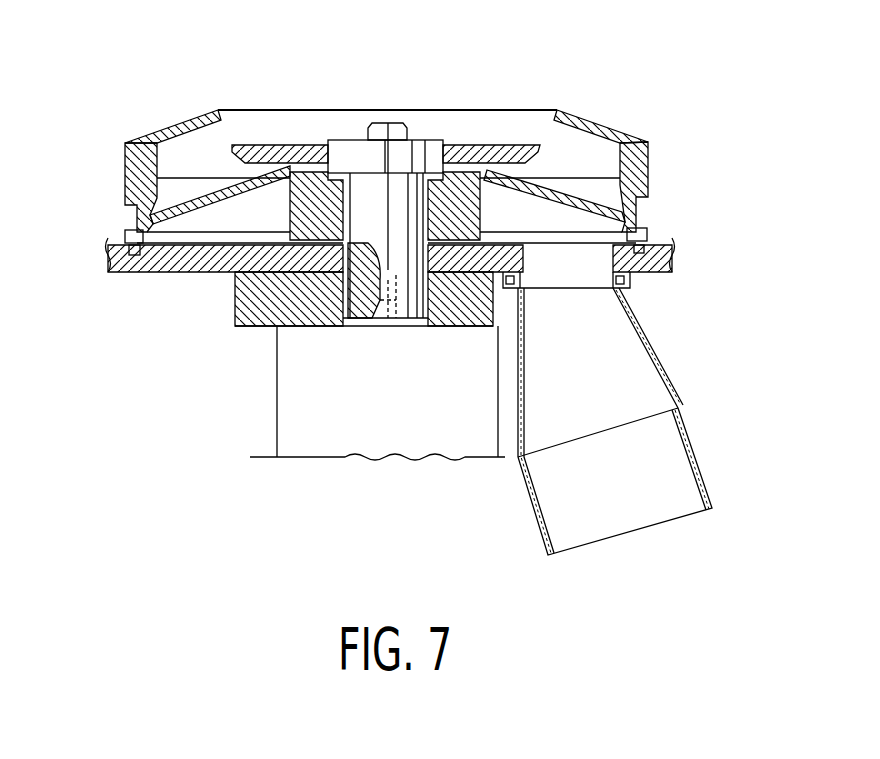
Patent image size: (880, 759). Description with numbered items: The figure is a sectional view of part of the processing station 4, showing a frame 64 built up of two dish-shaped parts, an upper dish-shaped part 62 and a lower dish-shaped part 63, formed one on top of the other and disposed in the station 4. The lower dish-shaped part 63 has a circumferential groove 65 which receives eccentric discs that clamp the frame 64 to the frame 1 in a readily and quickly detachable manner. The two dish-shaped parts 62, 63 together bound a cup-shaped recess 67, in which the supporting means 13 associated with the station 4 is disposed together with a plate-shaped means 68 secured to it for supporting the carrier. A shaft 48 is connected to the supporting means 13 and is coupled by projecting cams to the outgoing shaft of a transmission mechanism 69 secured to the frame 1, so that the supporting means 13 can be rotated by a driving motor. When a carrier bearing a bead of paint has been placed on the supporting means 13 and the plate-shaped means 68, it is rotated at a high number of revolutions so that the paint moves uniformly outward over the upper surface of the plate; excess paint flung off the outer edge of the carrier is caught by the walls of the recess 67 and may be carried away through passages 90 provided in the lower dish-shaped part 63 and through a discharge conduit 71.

The frame 1 is at (168, 262).
The station 4 is at (209, 318).
The supporting means 13 is at (425, 165).
The shaft 48 is at (415, 330).
The upper dish-shaped part 62 is at (152, 132).
The lower dish-shaped part 63 is at (125, 192).
The frame 64 is at (393, 152).
The circumferential groove 65 is at (637, 215).
The cup-shaped recess 67 is at (187, 148).
The plate-shaped means 68 is at (494, 165).
The transmission mechanism 69 is at (317, 428).
The discharge conduit 71 is at (657, 452).
The passages 90 is at (494, 180).